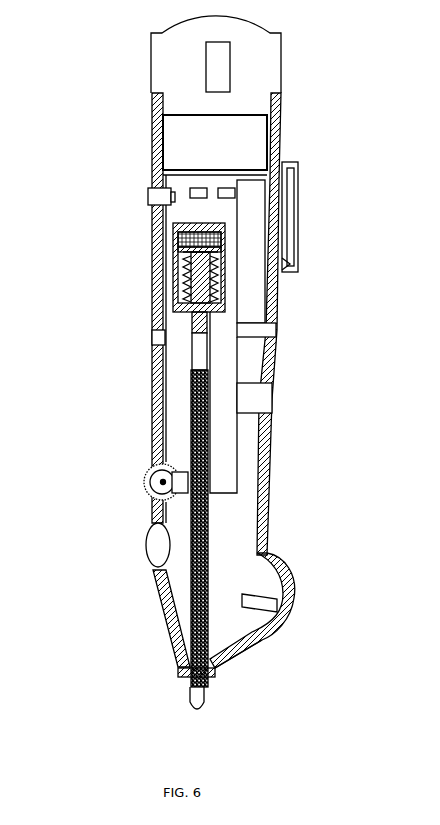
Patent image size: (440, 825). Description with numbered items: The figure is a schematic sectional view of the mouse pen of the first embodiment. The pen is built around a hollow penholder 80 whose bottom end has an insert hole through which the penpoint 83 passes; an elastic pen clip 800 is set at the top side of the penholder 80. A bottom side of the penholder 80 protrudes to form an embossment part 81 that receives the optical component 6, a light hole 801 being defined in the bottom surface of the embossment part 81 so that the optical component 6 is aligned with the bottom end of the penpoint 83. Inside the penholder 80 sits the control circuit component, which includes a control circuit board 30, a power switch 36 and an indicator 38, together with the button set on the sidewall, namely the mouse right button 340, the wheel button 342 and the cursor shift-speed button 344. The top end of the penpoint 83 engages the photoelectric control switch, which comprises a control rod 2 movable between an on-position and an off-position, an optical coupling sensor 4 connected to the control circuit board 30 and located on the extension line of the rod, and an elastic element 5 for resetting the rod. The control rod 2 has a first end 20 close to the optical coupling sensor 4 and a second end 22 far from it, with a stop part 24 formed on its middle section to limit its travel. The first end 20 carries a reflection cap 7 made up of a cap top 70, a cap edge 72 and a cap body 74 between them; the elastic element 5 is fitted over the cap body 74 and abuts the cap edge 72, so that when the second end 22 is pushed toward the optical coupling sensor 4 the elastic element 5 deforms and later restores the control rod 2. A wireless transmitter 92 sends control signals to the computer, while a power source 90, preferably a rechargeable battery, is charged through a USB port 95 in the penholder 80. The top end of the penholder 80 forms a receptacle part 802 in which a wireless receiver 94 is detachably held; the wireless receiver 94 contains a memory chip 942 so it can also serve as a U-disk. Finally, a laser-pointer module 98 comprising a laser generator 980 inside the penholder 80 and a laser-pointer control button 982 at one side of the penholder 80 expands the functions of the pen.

The control rod 2 is at (197, 582).
The optical coupling sensor 4 is at (176, 226).
The elastic element 5 is at (223, 264).
The optical component 6 is at (277, 608).
The reflection cap 7 is at (144, 267).
The first end 20 is at (213, 277).
The second end 22 is at (192, 326).
The stop part 24 is at (225, 308).
The control circuit board 30 is at (271, 324).
The power switch 36 is at (272, 329).
The indicator 38 is at (155, 340).
The cap top 70 is at (176, 248).
The cap edge 72 is at (176, 296).
The cap body 74 is at (176, 268).
The penholder 80 is at (263, 487).
The embossment part 81 is at (292, 578).
The penpoint 83 is at (188, 698).
The power source 90 is at (255, 217).
The wireless transmitter 92 is at (336, 204).
The wireless receiver 94 is at (254, 54).
The USB port 95 is at (262, 400).
The laser-pointer module 98 is at (143, 156).
The mouse right button 340 is at (158, 545).
The wheel button 342 is at (142, 482).
The cursor shift-speed button 344 is at (150, 203).
The elastic pen clip 800 is at (290, 232).
The light hole 801 is at (248, 644).
The receptacle part 802 is at (278, 127).
The memory chip 942 is at (218, 53).
The laser generator 980 is at (200, 143).
The laser-pointer control button 982 is at (200, 192).